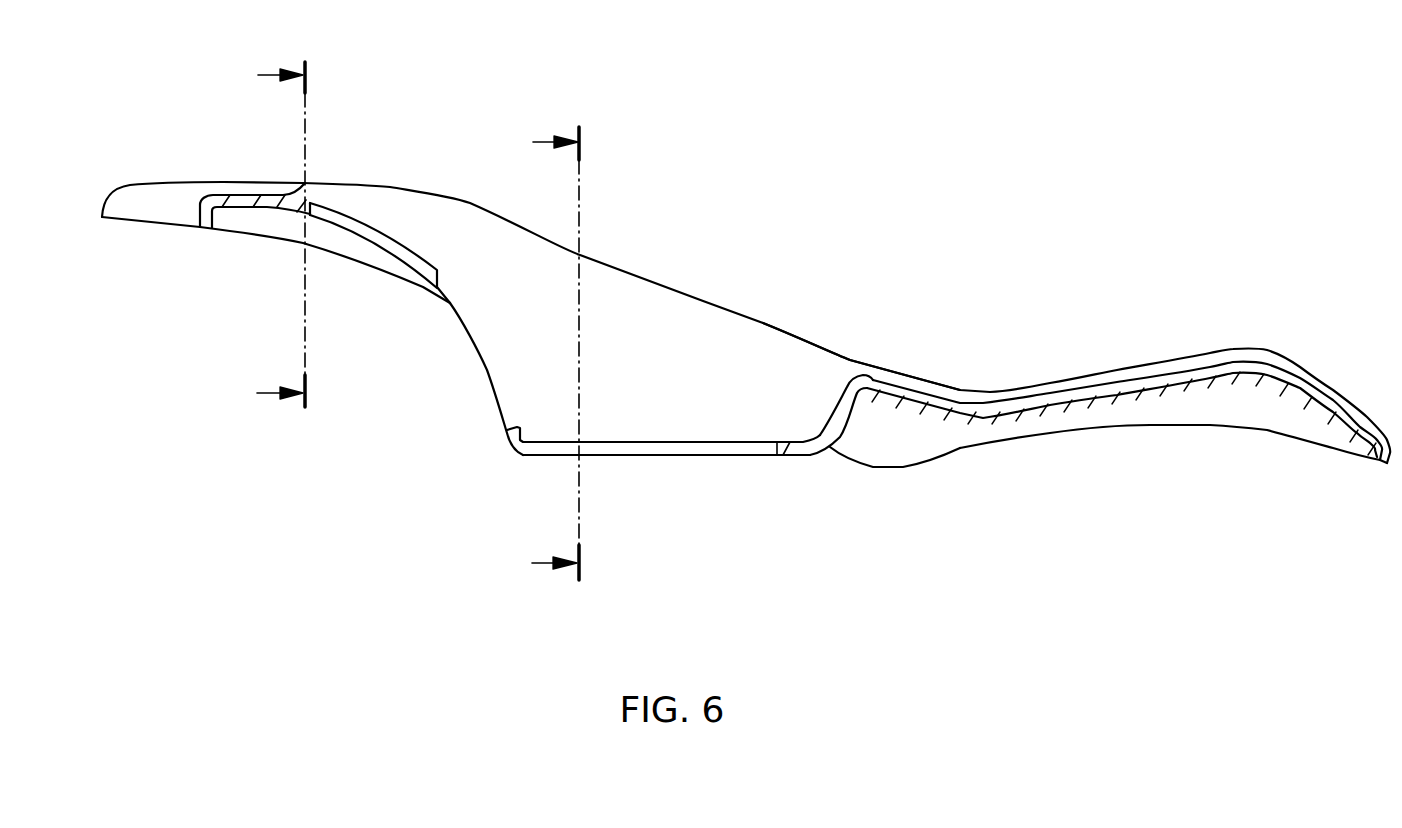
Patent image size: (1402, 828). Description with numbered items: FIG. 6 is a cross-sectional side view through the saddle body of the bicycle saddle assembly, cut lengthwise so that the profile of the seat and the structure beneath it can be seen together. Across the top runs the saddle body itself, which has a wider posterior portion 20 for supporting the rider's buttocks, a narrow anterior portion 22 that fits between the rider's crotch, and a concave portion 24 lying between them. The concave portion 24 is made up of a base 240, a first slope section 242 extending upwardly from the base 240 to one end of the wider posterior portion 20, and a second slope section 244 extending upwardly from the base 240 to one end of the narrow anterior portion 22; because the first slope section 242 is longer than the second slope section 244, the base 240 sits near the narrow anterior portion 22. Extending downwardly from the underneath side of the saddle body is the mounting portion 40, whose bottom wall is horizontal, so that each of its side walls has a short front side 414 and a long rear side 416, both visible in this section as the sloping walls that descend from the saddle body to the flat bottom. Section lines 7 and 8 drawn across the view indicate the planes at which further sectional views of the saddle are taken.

The section line 7- 7 is at (555, 335).
The section line 8- 8 is at (281, 217).
The wider posterior portion 20 is at (211, 172).
The narrow anterior portion 22 is at (1332, 356).
The concave portion 24 is at (1145, 172).
The base 240 is at (990, 392).
The first slope section 242 is at (763, 323).
The second slope section 244 is at (1103, 373).
The mounting portion 40 is at (734, 412).
The short front side 414 is at (853, 407).
The long rear side 416 is at (483, 367).